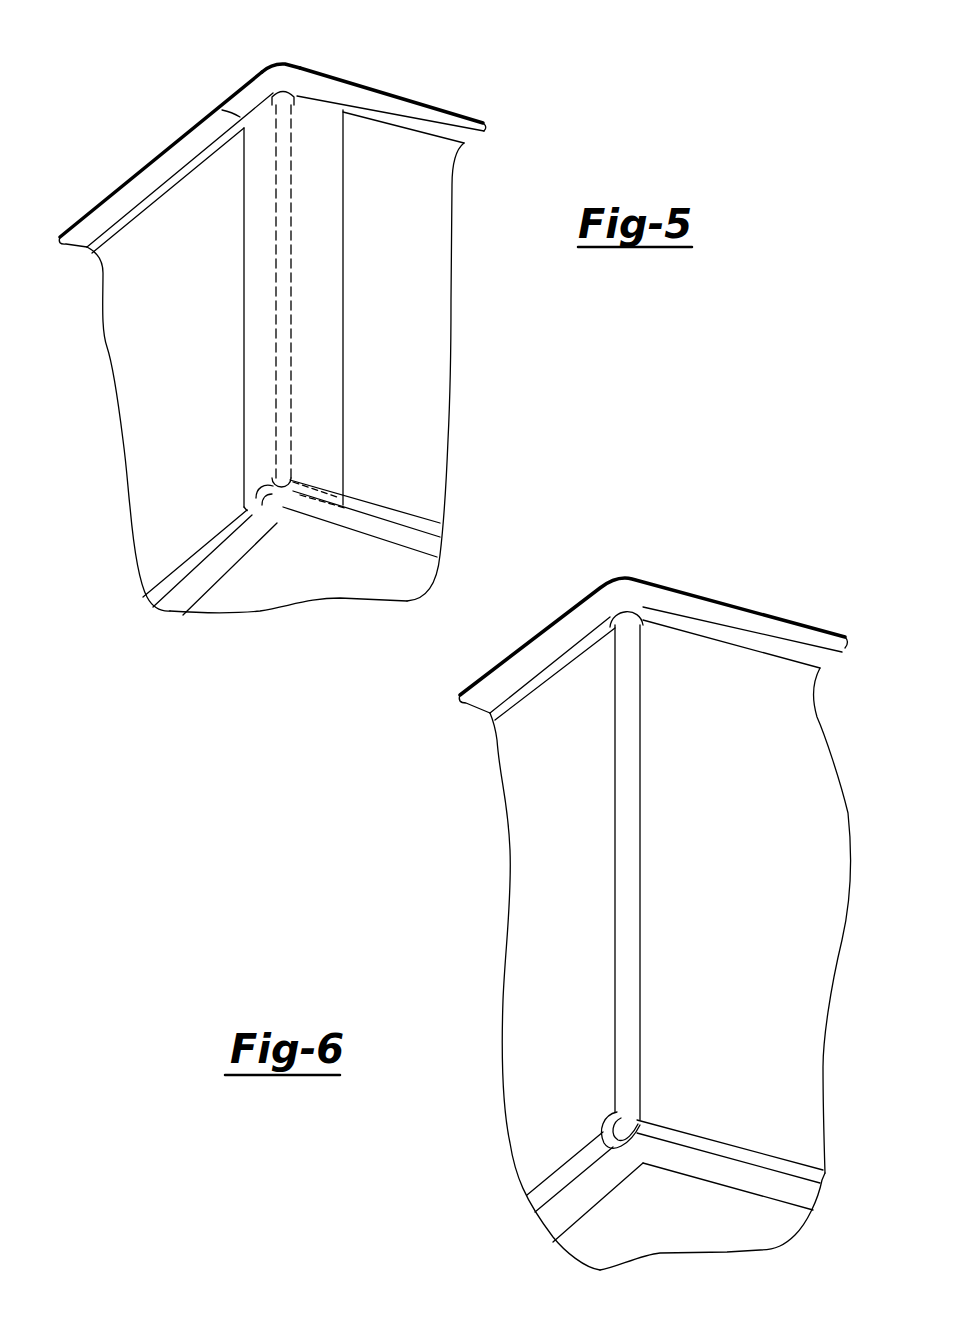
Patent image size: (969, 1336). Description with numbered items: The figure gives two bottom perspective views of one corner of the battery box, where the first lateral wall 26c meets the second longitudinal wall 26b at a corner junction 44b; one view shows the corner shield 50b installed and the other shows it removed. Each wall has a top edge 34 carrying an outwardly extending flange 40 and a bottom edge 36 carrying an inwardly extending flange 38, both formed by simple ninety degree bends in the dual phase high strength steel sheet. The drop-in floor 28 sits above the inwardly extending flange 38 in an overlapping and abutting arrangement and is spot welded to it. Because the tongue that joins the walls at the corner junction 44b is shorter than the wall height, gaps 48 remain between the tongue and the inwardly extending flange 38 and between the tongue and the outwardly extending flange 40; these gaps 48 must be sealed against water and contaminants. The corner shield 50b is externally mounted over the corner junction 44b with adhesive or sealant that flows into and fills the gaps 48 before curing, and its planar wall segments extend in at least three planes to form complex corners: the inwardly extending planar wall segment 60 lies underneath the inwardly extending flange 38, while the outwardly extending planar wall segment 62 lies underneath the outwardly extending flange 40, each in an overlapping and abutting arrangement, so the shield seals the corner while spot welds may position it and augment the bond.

In FIG. 5, the second longitudinal wall 26b is at (142, 363).
In FIG. 6, the second longitudinal wall 26b is at (540, 860).
In FIG. 5, the first lateral wall 26c is at (420, 390).
In FIG. 6, the first lateral wall 26c is at (797, 903).
In FIG. 5, the floor 28 is at (312, 592).
In FIG. 6, the floor 28 is at (662, 1232).
In FIG. 5, the top edge 34 is at (162, 205).
In FIG. 6, the top edge 34 is at (550, 687).
In FIG. 5, the bottom edge 36 is at (165, 570).
In FIG. 6, the bottom edge 36 is at (543, 1173).
In FIG. 5, the inwardly extending flange 38 is at (188, 597).
In FIG. 6, the inwardly extending flange 38 is at (555, 1215).
In FIG. 5, the outwardly extending flange 40 is at (110, 215).
In FIG. 6, the outwardly extending flange 40 is at (498, 687).
In FIG. 5, the corner junction 44b is at (289, 58).
In FIG. 6, the corner junction 44b is at (634, 563).
In FIG. 6, the gaps 48 is at (633, 602).
In FIG. 5, the corner shield 50b is at (325, 315).
In FIG. 5, the inwardly extending planar wall segment 60 is at (276, 525).
In FIG. 5, the outwardly extending planar wall segment 62 is at (242, 100).